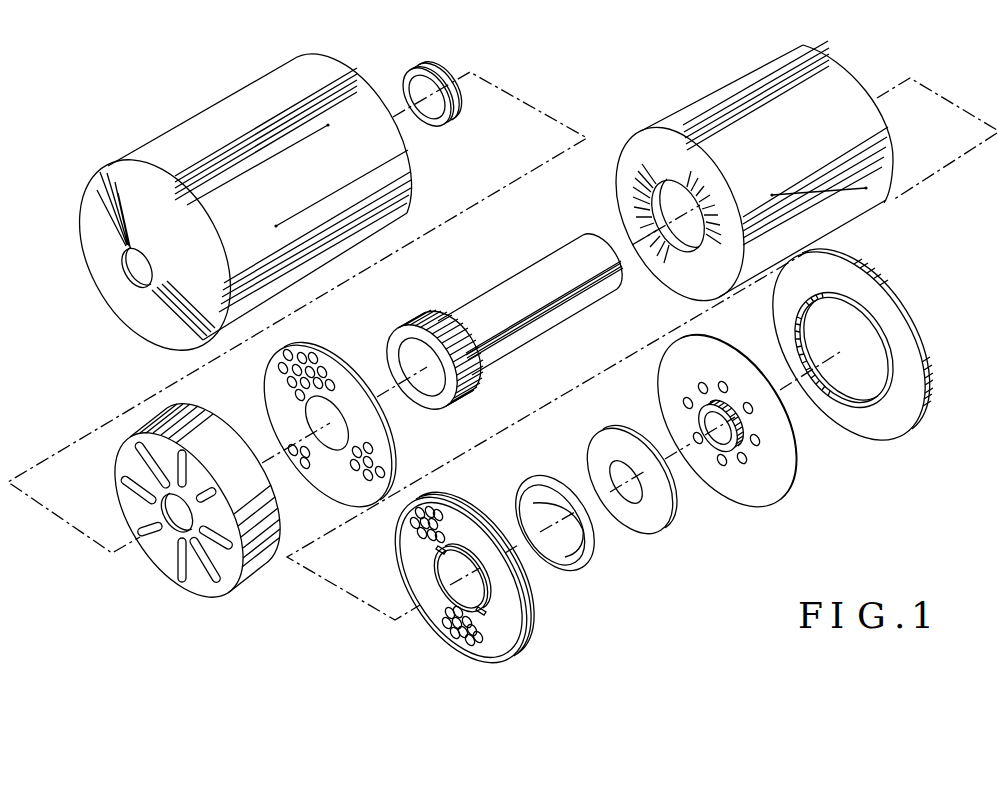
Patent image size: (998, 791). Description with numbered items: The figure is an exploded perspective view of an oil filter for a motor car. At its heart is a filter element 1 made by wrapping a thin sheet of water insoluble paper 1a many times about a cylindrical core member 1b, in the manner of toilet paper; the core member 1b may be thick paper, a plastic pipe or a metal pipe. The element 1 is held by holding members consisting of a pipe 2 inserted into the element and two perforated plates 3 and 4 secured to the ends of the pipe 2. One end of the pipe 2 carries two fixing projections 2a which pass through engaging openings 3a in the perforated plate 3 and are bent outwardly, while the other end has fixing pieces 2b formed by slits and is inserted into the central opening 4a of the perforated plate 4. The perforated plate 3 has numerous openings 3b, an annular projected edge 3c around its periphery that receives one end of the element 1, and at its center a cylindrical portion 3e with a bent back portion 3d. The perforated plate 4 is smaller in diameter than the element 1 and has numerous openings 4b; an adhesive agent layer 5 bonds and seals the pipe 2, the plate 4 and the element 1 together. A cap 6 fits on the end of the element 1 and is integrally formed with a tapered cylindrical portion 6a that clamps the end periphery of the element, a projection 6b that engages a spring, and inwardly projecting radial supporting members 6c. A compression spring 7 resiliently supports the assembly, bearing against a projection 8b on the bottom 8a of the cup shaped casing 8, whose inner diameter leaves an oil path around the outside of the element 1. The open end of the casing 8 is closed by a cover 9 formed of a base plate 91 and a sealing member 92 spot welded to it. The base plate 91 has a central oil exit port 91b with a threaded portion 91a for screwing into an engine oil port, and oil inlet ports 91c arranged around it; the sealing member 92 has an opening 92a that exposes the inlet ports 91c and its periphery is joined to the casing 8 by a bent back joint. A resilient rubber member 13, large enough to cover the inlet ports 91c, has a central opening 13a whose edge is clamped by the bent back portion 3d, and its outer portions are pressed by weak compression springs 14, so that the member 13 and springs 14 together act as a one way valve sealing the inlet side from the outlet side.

The filter element 1 is at (732, 180).
The water insoluble paper 1a is at (678, 112).
The cylindrical core member 1b is at (652, 198).
The pipe 2 is at (510, 332).
The fixing projections 2a is at (590, 230).
The fixing pieces 2b is at (392, 363).
The perforated plate 3 is at (462, 576).
The engaging openings 3a is at (441, 549).
The openings 3b is at (440, 512).
The annular projected edge 3c is at (442, 630).
The bent back portion 3d is at (466, 578).
The cylindrical portion 3e is at (452, 597).
The perforated plate 4 is at (321, 425).
The central opening 4a is at (286, 355).
The openings 4b is at (337, 395).
The adhesive agent layer 5 is at (455, 388).
The cap 6 is at (189, 519).
The tapered cylindrical portion 6a is at (255, 572).
The projection 6b is at (165, 511).
The radial supporting members 6c is at (140, 453).
The compression spring 7 is at (413, 73).
The casing 8 is at (228, 215).
The bottom 8a is at (130, 310).
The projection 8b is at (125, 265).
The cover 9 is at (801, 390).
The base plate 91 is at (736, 433).
The threaded portion 91a is at (713, 447).
The oil exit port 91b is at (726, 414).
The oil inlet ports 91c is at (683, 402).
The sealing member 92 is at (861, 360).
The opening 92a is at (856, 339).
The member 13 is at (630, 488).
The central opening 13a is at (622, 468).
The compression springs 14 is at (553, 480).